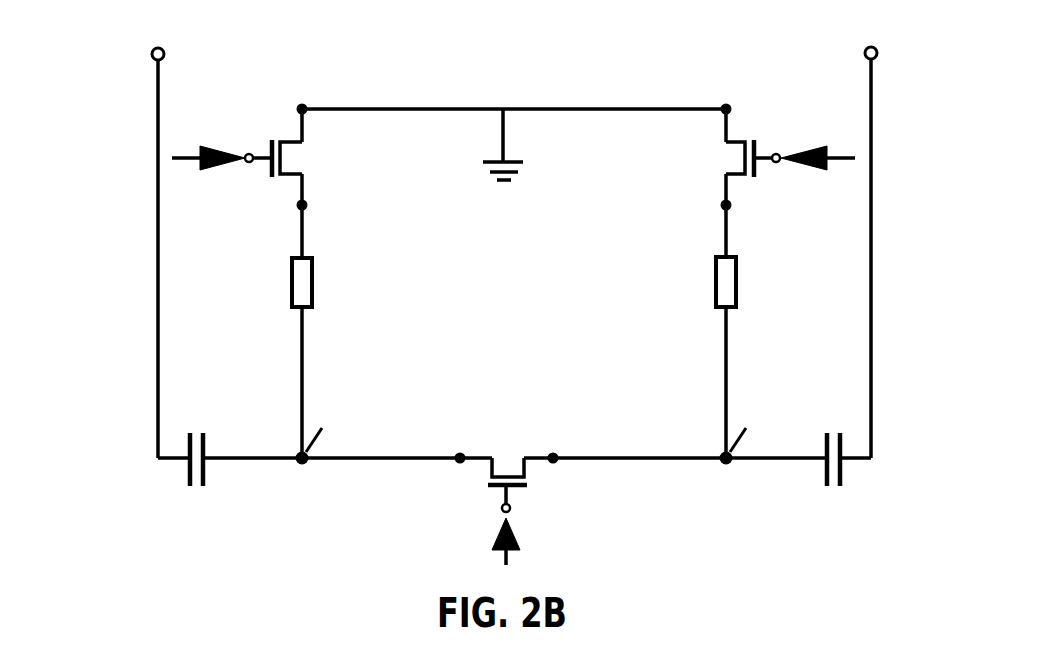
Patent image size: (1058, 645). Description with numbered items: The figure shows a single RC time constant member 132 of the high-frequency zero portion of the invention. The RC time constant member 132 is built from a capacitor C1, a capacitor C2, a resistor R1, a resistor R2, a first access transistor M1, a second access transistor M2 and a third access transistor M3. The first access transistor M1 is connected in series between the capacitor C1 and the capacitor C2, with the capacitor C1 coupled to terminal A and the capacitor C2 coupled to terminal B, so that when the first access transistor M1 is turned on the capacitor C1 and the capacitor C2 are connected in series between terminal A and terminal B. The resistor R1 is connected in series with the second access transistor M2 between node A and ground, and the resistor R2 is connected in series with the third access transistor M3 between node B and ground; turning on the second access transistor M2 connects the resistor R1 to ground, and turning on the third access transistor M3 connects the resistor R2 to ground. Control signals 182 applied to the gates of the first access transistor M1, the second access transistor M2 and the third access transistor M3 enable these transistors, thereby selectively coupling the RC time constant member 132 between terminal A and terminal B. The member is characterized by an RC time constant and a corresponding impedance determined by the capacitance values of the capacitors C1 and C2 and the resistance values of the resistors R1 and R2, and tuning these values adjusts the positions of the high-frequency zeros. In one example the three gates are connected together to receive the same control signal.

The RC time constant member 132 is at (100, 36).
The control signals 182 is at (205, 152).
The first access transistor M1 is at (485, 485).
The second access transistor M2 is at (266, 144).
The third access transistor M3 is at (759, 143).
The resistor R1 is at (280, 282).
The resistor R2 is at (704, 282).
The capacitor C1 is at (196, 479).
The capacitor C2 is at (831, 479).